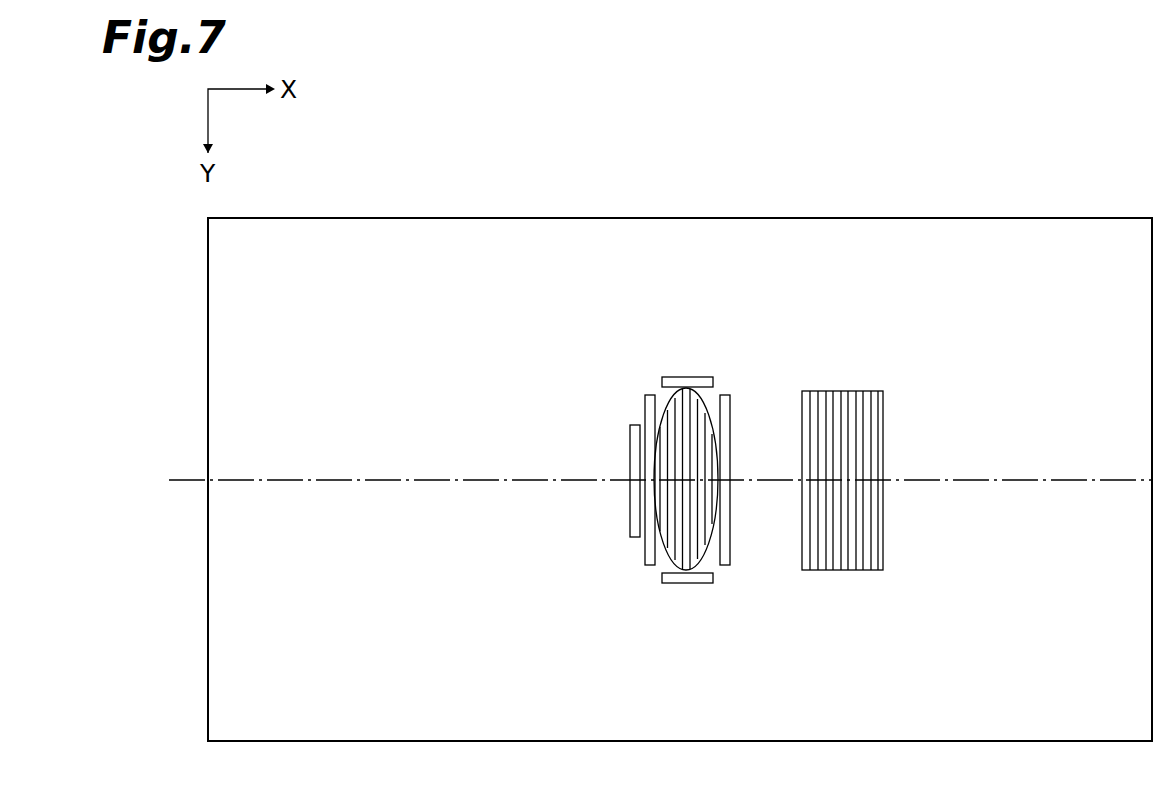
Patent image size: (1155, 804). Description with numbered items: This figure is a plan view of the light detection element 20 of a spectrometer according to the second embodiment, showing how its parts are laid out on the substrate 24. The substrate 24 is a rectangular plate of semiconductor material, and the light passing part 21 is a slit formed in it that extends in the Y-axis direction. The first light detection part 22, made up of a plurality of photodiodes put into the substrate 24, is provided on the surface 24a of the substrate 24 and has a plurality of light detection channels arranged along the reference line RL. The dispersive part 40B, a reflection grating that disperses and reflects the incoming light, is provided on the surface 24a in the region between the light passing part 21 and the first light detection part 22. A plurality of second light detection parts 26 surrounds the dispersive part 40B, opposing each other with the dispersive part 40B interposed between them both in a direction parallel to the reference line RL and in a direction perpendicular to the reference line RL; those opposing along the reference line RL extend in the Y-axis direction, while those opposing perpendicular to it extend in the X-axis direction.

The light detection element 20 is at (983, 218).
The light passing part 21 is at (633, 437).
The first light detection part 22 is at (845, 398).
The substrate 24 is at (338, 733).
The surface 24a is at (689, 733).
The second light detection part 26 is at (703, 382).
The dispersive part 40B is at (688, 389).
The reference line RL is at (186, 480).